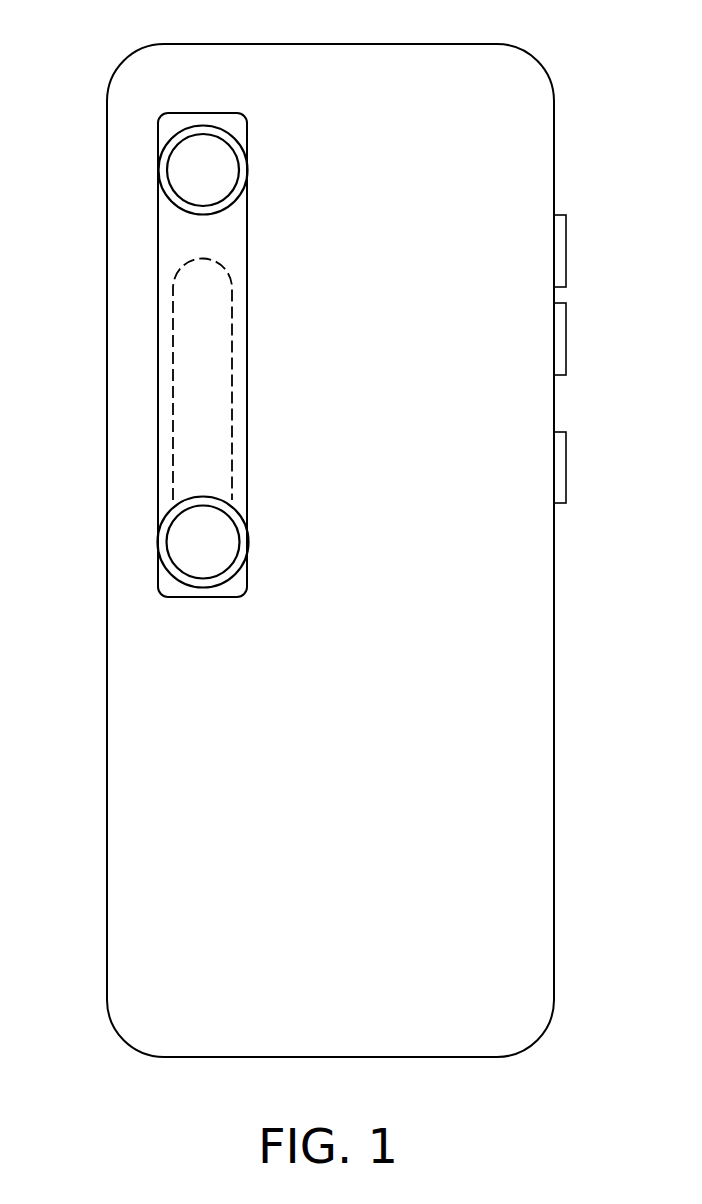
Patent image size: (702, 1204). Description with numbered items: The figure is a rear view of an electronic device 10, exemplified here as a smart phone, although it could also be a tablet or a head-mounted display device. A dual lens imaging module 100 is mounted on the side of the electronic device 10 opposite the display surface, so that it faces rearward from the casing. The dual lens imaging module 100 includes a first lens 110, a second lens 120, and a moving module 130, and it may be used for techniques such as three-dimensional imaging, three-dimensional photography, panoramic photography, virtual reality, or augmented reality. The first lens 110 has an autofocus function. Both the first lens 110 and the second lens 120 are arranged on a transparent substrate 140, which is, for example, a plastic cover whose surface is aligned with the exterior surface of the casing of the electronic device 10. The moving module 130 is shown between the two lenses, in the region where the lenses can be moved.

The electronic device 10 is at (518, 85).
The dual lens imaging module 100 is at (146, 240).
The first lens 110 is at (220, 173).
The second lens 120 is at (219, 545).
The moving module 130 is at (218, 413).
The transparent substrate 140 is at (237, 125).